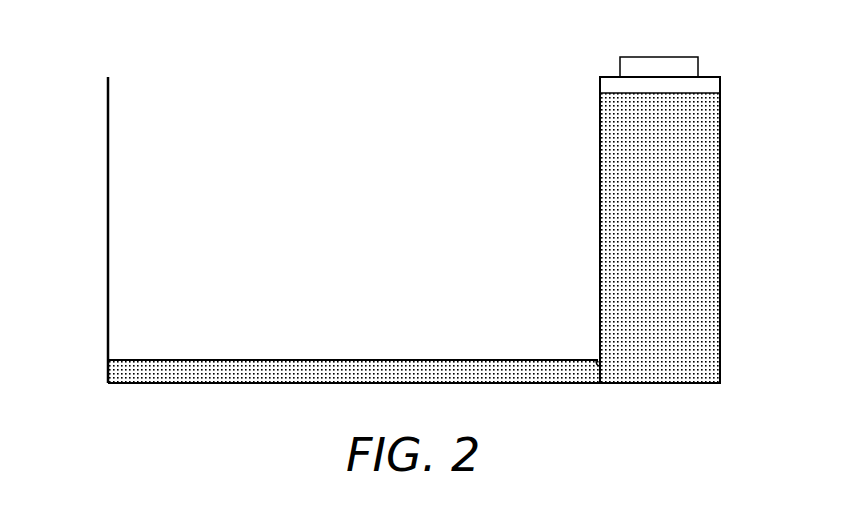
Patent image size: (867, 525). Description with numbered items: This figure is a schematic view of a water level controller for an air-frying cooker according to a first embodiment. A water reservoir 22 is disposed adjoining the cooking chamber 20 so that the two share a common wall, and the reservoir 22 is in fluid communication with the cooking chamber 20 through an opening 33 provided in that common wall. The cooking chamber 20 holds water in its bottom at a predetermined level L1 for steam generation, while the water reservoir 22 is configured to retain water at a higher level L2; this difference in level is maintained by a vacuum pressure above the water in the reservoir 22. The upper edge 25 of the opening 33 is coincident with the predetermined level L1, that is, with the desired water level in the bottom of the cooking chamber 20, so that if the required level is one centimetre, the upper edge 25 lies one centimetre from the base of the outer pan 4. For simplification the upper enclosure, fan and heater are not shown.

The outer pan 4 is at (107, 222).
The cooking chamber 20 is at (361, 163).
The predetermined level L1 is at (348, 360).
The water reservoir 22 is at (697, 132).
The higher level L2 is at (655, 93).
The upper edge 25 is at (596, 362).
The opening 33 is at (603, 384).